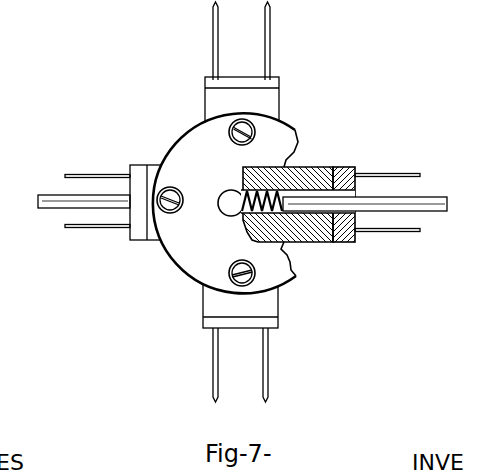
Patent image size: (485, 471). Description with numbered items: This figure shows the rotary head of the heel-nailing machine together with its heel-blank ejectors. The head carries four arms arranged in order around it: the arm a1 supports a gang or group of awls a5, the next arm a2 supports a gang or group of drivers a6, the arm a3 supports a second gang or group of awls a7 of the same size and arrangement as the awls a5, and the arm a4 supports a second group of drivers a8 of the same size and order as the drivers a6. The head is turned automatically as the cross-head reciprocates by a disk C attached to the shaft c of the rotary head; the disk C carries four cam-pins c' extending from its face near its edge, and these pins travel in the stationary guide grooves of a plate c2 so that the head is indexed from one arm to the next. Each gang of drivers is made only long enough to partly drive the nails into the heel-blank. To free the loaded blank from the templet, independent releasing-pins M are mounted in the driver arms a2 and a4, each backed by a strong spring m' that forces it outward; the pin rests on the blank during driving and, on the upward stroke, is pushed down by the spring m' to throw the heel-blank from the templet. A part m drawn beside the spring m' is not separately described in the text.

The second gang or group of awls a7 is at (270, 35).
The arm a3 is at (242, 102).
The arm a4 is at (148, 202).
The arm a1 is at (240, 304).
The gang or group of awls a5 is at (218, 363).
The second group of drivers a8 is at (85, 228).
The releasing-pin M is at (46, 208).
The gang or group of drivers a6 is at (403, 232).
The arm a2 is at (340, 243).
The disk C is at (225, 203).
The cam-pin c' is at (253, 202).
The plate c2 is at (183, 197).
The shaft c is at (286, 203).
The spring m' is at (288, 189).
The right shaft m is at (365, 195).